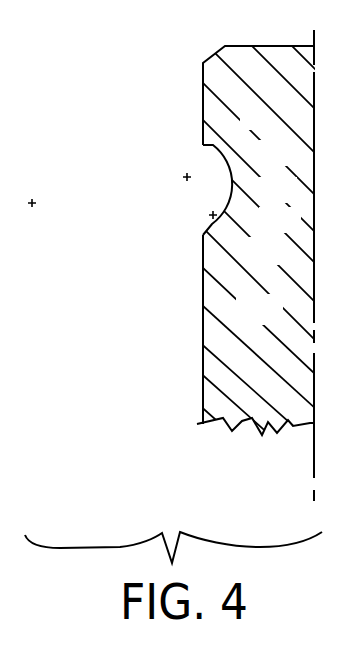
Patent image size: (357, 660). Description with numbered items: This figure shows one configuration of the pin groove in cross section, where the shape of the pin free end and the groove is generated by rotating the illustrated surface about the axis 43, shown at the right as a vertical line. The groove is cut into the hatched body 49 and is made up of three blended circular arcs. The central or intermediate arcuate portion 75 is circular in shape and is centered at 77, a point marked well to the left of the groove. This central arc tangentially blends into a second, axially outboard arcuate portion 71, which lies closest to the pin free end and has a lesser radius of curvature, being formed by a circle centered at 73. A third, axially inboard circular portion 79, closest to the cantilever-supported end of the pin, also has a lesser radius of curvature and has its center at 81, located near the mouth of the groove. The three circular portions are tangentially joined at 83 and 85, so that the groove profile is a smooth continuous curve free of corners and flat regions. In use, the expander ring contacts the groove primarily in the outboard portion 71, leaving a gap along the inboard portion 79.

The axis 43 is at (314, 466).
The body 49 is at (277, 322).
The axially outboard arcuate portion 71 is at (214, 146).
The center of outboard arcuate portion 73 is at (186, 176).
The intermediate arcuate portion 75 is at (232, 198).
The center of intermediate arcuate portion 77 is at (32, 208).
The axially inboard circular portion 79 is at (226, 232).
The center of inboard circular portion 81 is at (212, 216).
The tangential junction 83 is at (235, 177).
The tangential junction 85 is at (230, 215).